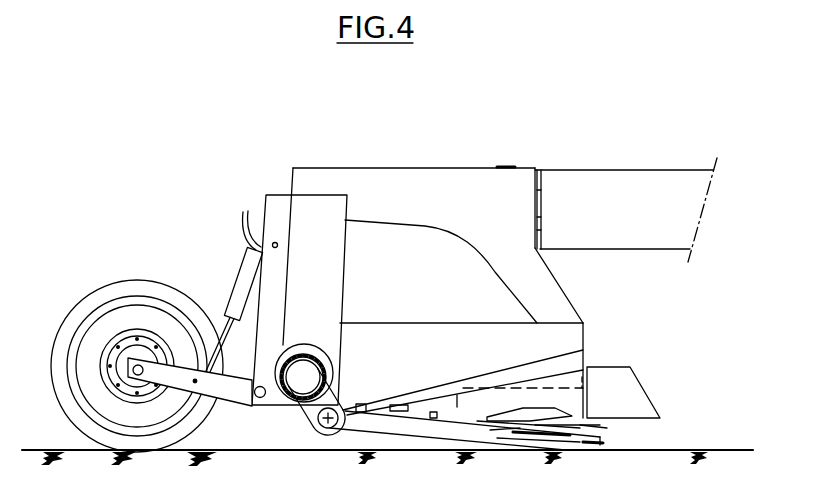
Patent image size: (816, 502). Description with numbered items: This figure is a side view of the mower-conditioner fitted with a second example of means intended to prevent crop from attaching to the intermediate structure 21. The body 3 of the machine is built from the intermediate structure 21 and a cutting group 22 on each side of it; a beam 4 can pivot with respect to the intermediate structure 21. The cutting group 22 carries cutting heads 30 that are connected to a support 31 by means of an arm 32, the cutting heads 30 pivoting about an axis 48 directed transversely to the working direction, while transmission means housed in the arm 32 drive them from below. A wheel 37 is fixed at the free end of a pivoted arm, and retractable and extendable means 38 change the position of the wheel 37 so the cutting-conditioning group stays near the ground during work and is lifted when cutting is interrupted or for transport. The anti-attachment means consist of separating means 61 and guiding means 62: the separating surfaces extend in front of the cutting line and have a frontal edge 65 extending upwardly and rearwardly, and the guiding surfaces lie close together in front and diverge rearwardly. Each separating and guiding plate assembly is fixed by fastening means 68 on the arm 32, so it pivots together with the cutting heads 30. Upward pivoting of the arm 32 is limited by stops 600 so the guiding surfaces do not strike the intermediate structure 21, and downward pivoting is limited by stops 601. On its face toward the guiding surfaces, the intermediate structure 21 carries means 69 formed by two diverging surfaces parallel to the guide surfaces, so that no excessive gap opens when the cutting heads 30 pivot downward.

The body 3 is at (150, 137).
The intermediate structure 21 is at (363, 187).
The beam 4 is at (665, 190).
The wheel 37 is at (82, 317).
The retractable and extendable means 38 is at (247, 290).
The stops 601 is at (340, 345).
The stops 600 is at (393, 406).
The fastening means 68 is at (433, 412).
The guiding means 62 is at (493, 407).
The means 69 is at (570, 352).
The separating means 61 is at (647, 355).
The frontal edge 65 is at (645, 390).
The cutting group 22 is at (655, 431).
The cutting heads 30 is at (602, 428).
The support 31 is at (302, 402).
The axis 48 is at (328, 429).
The arm 32 is at (410, 427).